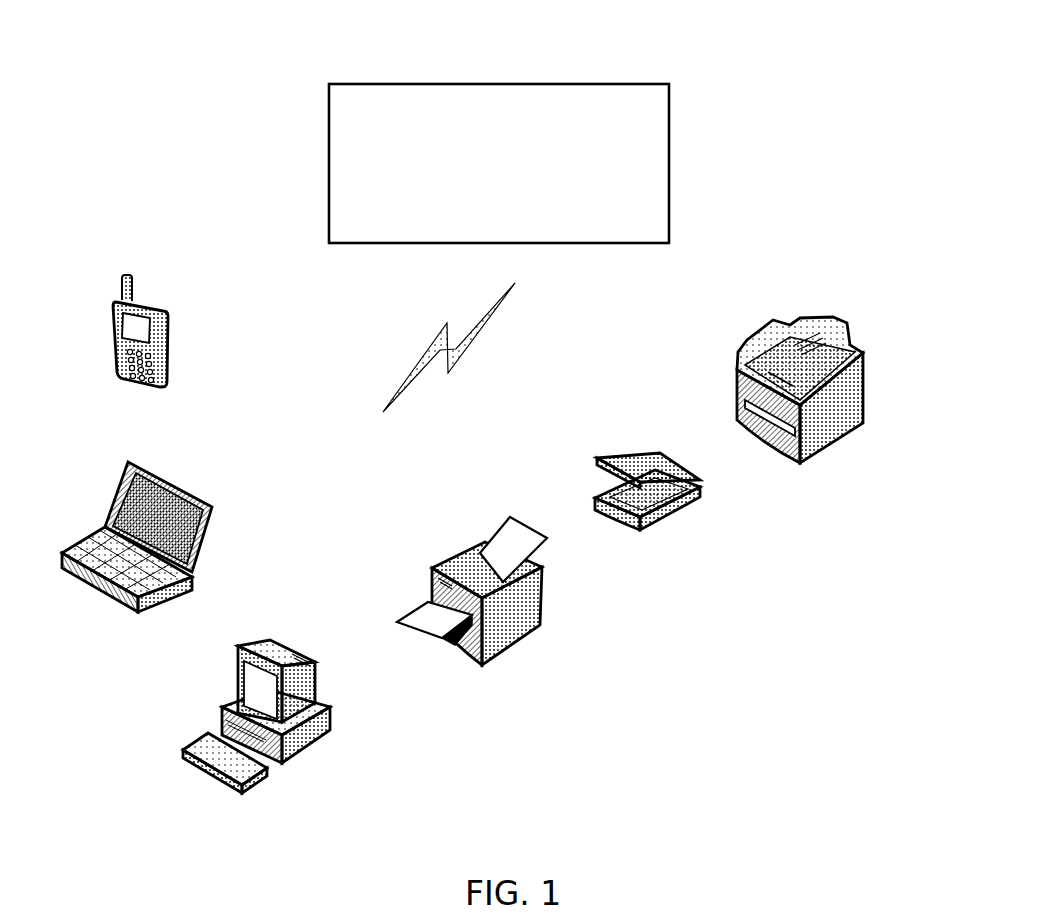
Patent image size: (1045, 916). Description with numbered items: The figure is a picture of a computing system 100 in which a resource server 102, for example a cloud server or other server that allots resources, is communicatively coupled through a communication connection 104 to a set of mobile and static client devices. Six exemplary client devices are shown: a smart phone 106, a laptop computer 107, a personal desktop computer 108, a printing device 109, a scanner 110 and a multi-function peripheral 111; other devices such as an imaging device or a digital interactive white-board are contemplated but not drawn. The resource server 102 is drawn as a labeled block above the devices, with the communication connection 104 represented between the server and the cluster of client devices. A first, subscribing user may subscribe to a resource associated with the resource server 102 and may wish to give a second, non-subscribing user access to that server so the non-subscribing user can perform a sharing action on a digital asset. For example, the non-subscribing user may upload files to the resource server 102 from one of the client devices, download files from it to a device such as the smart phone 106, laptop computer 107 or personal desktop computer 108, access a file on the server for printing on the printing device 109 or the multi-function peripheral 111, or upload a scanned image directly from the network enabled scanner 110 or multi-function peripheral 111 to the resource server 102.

The computing system 100 is at (868, 63).
The resource server 102 is at (330, 118).
The communication connection 104 is at (435, 337).
The smart phone 106 is at (114, 317).
The laptop computer 107 is at (121, 487).
The personal desktop computer 108 is at (237, 674).
The printing device 109 is at (448, 566).
The scanner 110 is at (622, 457).
The multi-function peripheral 111 is at (752, 336).